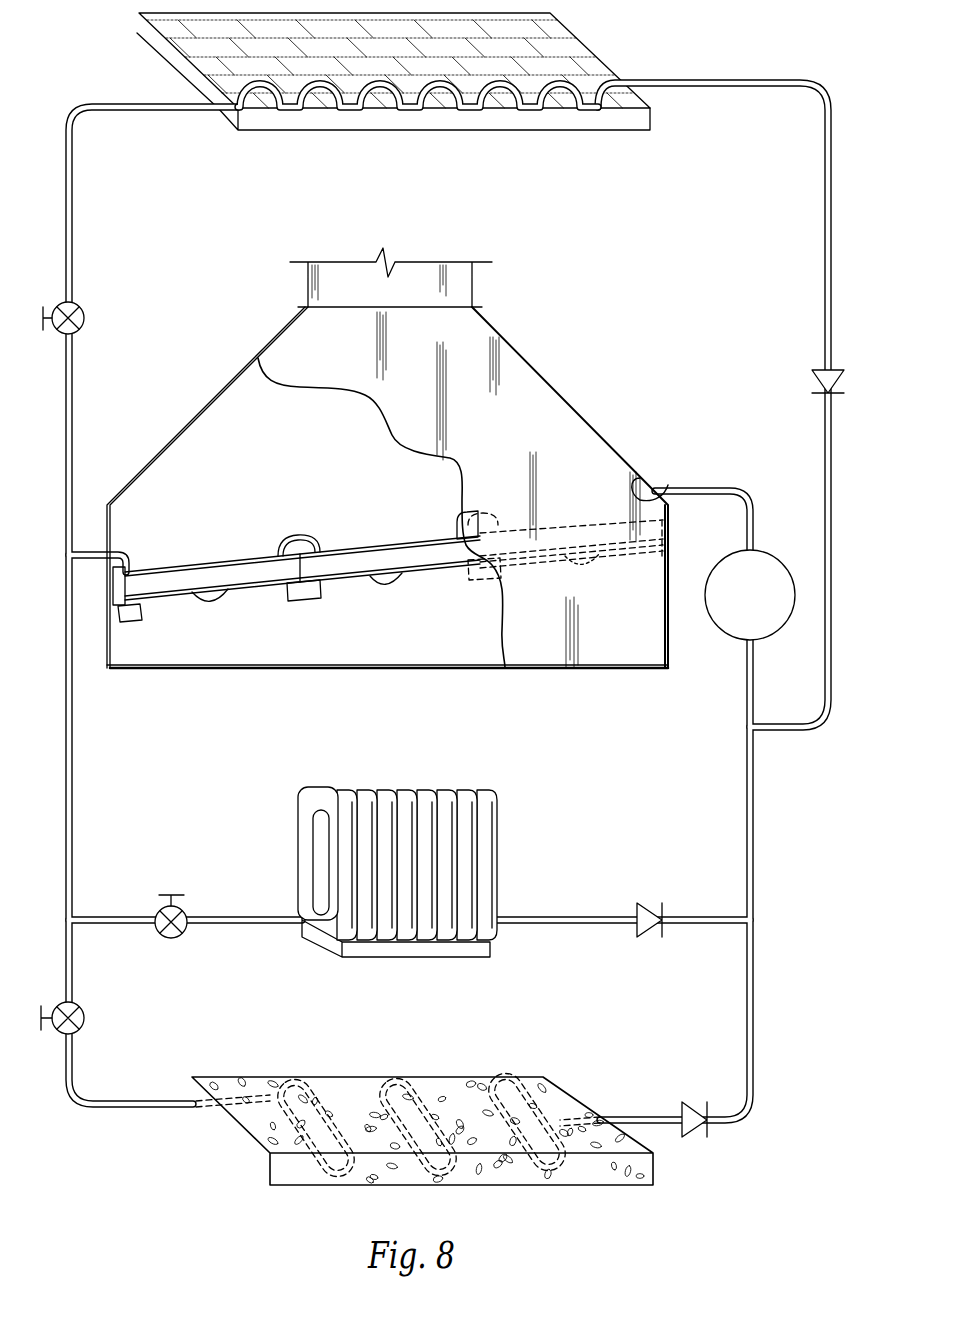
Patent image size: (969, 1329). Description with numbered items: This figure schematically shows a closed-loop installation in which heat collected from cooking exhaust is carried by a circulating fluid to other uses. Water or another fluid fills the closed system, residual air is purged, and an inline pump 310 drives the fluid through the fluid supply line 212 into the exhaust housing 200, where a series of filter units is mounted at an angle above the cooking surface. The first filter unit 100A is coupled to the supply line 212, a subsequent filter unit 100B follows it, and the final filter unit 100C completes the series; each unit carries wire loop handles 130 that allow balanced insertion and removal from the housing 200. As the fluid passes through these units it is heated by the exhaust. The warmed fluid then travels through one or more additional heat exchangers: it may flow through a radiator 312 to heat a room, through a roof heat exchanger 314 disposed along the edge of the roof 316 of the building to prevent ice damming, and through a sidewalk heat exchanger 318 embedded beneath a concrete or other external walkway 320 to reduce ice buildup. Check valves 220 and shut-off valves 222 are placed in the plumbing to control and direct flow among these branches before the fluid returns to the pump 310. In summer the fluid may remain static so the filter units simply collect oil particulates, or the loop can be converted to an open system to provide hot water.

The roof heat exchanger 314 is at (170, 30).
The roof 316 is at (543, 110).
The shut-off valve 222 is at (85, 320).
The check valve 220 is at (817, 380).
The exhaust housing 200 is at (502, 431).
The fluid supply line 212 is at (690, 484).
The inline pump 310 is at (765, 552).
The first filter unit 100A is at (585, 528).
The subsequent filter unit 100B is at (386, 548).
The final filter unit 100C is at (208, 575).
The handle 130 is at (210, 604).
The radiator 312 is at (500, 878).
The walkway 320 is at (262, 1076).
The sidewalk heat exchanger 318 is at (500, 1083).